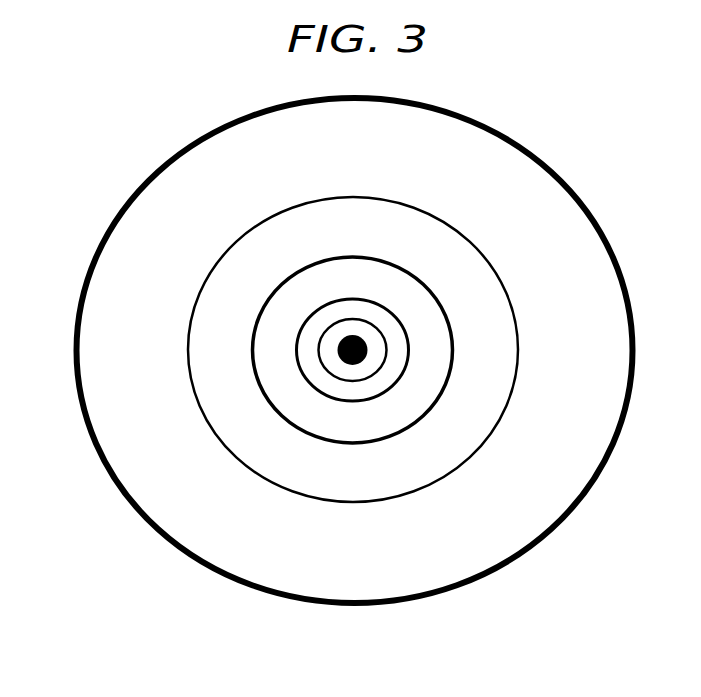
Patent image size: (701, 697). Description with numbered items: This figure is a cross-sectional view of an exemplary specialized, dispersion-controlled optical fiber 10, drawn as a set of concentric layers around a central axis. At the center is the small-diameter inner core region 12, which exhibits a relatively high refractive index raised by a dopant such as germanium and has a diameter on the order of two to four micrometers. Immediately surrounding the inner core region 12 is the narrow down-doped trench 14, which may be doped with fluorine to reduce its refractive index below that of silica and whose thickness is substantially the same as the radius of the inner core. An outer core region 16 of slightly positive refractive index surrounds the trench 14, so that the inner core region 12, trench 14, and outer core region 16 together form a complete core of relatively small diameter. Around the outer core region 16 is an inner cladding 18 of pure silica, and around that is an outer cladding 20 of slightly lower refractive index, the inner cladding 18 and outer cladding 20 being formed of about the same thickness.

The dispersion-controlled optical fiber 10 is at (103, 188).
The inner core region 12 is at (342, 362).
The down-doped trench 14 is at (352, 372).
The outer core region 16 is at (352, 309).
The inner cladding 18 is at (430, 318).
The outer cladding 20 is at (440, 458).